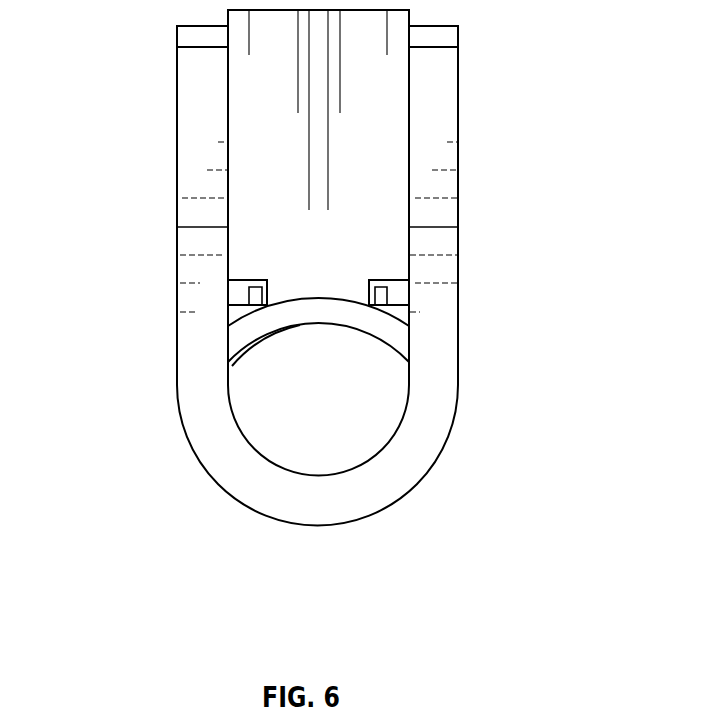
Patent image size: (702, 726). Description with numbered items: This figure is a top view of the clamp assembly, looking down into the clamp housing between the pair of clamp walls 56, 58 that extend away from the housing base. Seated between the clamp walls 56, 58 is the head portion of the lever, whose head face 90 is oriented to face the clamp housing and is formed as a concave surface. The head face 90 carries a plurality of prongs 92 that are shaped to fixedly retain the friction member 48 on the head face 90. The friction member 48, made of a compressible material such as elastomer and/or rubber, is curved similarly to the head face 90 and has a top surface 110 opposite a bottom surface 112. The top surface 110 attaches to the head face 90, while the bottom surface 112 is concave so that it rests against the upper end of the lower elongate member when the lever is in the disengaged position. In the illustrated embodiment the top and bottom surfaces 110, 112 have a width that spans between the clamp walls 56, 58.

The friction member 48 is at (252, 345).
The clamp wall 56 is at (468, 203).
The clamp wall 58 is at (170, 71).
The head face 90 is at (318, 297).
The prongs 92 is at (243, 294).
The top surface 110 is at (342, 297).
The bottom surface 112 is at (365, 331).